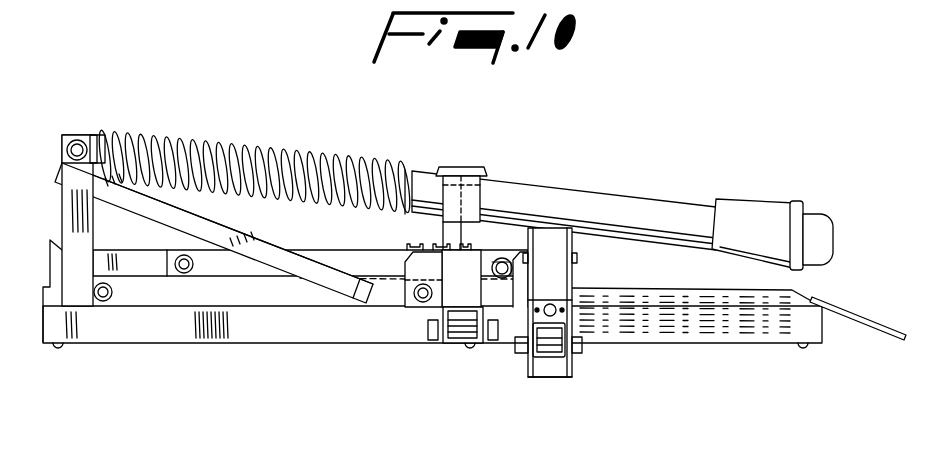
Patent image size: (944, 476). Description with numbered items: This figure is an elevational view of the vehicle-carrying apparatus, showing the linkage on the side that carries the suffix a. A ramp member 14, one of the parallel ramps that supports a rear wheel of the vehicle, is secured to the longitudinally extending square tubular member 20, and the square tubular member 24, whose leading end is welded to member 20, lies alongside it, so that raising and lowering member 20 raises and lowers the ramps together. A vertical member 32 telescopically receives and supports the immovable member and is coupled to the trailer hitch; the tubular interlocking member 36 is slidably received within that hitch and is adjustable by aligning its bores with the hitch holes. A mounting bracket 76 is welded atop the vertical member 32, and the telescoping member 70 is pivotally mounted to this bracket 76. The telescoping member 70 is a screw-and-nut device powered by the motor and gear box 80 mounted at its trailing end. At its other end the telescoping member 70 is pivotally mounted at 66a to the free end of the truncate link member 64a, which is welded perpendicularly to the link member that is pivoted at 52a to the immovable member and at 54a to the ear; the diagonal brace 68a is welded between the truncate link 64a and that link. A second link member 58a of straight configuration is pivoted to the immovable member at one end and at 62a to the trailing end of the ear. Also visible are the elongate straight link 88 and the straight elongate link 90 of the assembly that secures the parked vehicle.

The ramp member 14 is at (853, 323).
The square tubular member 20 is at (470, 342).
The square tubular member 24 is at (318, 333).
The vertical member 32 is at (573, 367).
The tubular interlocking member 36 is at (545, 358).
The pivot mounting 52a is at (103, 300).
The pivot mounting 54a is at (427, 300).
The second link member 58a is at (325, 247).
The pivot mounting 62a is at (510, 250).
The truncate link member 64a is at (70, 229).
The pivot mounting 66a is at (80, 141).
The diagonal brace 68a is at (213, 233).
The telescoping member 70 is at (213, 133).
The mounting bracket 76 is at (557, 277).
The motor and gear box 80 is at (750, 205).
The elongate straight link 88 is at (452, 167).
The straight elongate link 90 is at (466, 170).